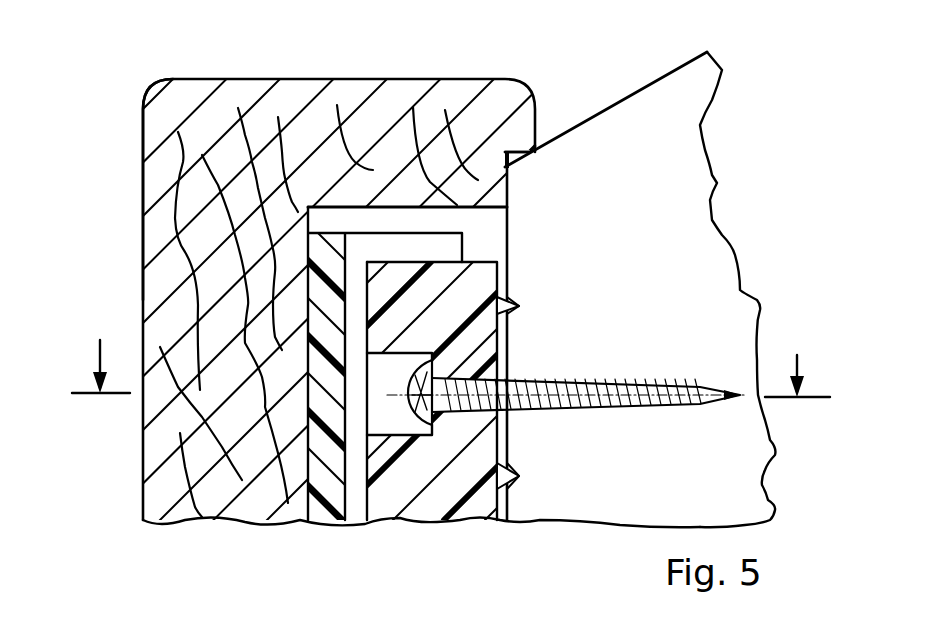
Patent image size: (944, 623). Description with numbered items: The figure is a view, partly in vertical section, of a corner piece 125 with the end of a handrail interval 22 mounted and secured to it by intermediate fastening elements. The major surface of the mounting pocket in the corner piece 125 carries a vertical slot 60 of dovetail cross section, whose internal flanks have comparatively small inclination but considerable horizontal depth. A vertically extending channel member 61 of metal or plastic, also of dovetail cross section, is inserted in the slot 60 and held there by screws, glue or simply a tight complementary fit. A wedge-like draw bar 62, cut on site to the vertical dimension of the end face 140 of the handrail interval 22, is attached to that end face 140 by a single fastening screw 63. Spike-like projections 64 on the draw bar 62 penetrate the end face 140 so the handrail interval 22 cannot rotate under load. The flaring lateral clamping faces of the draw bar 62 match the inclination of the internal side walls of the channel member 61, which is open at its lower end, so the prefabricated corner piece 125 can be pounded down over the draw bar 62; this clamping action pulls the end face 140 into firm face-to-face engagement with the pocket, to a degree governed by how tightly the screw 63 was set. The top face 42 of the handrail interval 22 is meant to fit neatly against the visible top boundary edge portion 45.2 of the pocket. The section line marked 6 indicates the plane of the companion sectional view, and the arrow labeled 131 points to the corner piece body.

The wooden frame member 131 is at (361, 79).
The corner piece 125 is at (153, 127).
The vertical slot 60 is at (345, 225).
The end face 140 is at (500, 238).
The top boundary edge portion 45.2 is at (513, 157).
The channel member 61 is at (330, 512).
The draw bar 62 is at (460, 510).
The fastening screw 63 is at (597, 383).
The spike-like projections 64 is at (507, 305).
The top face 42 is at (627, 97).
The handrail interval 22 is at (700, 240).
The section line VI-VI 6 is at (450, 371).